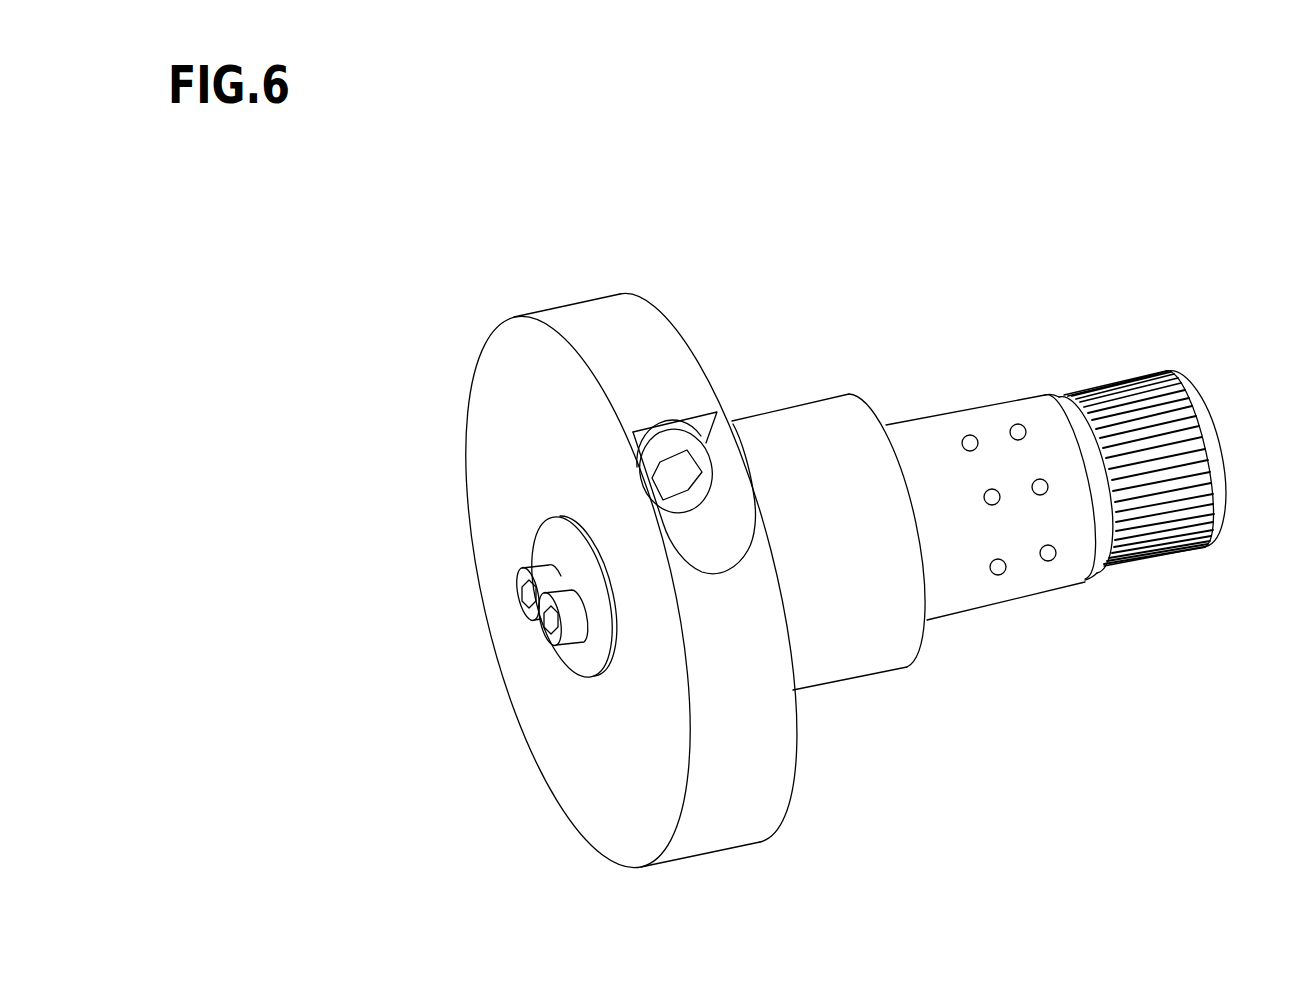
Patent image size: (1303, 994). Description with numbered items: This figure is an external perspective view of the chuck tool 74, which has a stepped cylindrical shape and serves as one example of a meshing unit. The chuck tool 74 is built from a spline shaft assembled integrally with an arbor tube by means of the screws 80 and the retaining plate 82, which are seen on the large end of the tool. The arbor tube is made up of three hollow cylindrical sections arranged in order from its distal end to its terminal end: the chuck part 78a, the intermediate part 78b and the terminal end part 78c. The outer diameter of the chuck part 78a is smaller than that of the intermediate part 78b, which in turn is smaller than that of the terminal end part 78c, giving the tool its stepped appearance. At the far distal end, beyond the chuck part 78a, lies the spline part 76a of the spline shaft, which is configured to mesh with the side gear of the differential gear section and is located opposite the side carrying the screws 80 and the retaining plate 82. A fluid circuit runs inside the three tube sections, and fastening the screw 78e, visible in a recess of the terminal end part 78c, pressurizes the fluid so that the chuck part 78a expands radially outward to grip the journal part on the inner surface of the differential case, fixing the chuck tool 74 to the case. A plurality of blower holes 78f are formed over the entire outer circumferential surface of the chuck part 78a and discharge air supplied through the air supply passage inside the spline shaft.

The chuck tool 74 is at (1113, 305).
The spline part 76a is at (1167, 527).
The chuck part 78a is at (1028, 580).
The intermediate part 78b is at (857, 660).
The terminal end part 78c is at (538, 725).
The screw 78e is at (660, 430).
The blower holes 78f is at (1010, 415).
The screws 80 is at (545, 630).
The retaining plate 82 is at (545, 540).